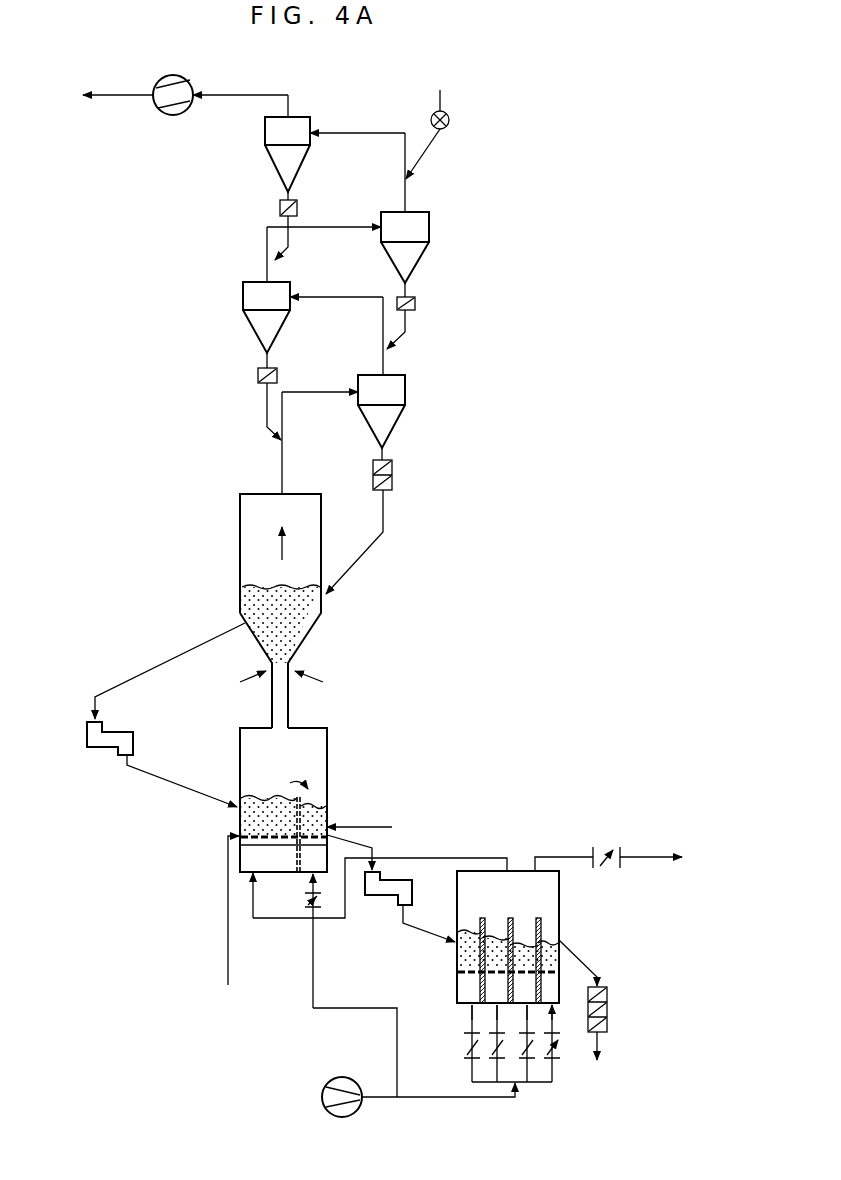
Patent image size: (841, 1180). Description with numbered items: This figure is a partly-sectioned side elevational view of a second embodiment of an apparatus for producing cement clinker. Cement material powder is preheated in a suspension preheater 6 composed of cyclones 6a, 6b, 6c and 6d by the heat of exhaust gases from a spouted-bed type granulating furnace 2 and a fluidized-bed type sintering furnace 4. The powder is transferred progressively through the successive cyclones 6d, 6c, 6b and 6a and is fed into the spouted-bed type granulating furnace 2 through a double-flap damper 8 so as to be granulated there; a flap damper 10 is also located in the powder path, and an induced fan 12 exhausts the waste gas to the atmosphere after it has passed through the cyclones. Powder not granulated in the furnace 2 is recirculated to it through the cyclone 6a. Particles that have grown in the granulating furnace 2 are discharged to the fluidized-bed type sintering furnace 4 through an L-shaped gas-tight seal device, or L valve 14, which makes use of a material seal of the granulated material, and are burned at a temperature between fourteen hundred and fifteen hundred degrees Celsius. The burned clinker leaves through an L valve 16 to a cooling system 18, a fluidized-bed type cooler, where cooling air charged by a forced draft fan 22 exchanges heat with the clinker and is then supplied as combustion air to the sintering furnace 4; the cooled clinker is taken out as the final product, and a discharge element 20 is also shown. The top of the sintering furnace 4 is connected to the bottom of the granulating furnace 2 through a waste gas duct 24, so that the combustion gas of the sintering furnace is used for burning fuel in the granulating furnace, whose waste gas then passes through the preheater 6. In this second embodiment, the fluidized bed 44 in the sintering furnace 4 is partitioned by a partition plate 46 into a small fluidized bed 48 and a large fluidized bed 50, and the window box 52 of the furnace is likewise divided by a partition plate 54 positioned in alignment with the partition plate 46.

The spouted-bed type granulating furnace 2 is at (240, 526).
The fluidized-bed type sintering furnace 4 is at (327, 766).
The suspension preheater 6 is at (240, 270).
The cyclone 6a is at (405, 388).
The cyclone 6b is at (243, 302).
The cyclone 6c is at (429, 228).
The cyclone 6d is at (308, 117).
The double-flap damper 8 is at (392, 482).
The flap damper 10 is at (258, 375).
The induced fan 12 is at (173, 115).
The L valve 14 is at (128, 731).
The L valve 16 is at (391, 888).
The cooling system 18 is at (457, 964).
The discharge valve 20 is at (607, 1014).
The forced draft fan 22 is at (342, 1078).
The waste gas duct 24 is at (290, 713).
The fluidized bed 44 is at (317, 802).
The partition plate 46 is at (287, 808).
The small fluidized bed 48 is at (317, 819).
The large fluidized bed 50 is at (254, 795).
The window box 52 is at (246, 863).
The partition plate 54 is at (296, 860).